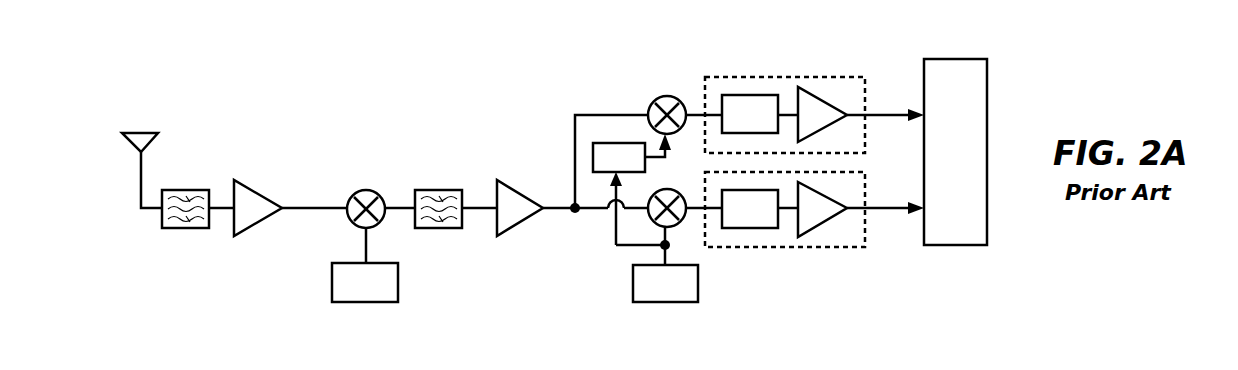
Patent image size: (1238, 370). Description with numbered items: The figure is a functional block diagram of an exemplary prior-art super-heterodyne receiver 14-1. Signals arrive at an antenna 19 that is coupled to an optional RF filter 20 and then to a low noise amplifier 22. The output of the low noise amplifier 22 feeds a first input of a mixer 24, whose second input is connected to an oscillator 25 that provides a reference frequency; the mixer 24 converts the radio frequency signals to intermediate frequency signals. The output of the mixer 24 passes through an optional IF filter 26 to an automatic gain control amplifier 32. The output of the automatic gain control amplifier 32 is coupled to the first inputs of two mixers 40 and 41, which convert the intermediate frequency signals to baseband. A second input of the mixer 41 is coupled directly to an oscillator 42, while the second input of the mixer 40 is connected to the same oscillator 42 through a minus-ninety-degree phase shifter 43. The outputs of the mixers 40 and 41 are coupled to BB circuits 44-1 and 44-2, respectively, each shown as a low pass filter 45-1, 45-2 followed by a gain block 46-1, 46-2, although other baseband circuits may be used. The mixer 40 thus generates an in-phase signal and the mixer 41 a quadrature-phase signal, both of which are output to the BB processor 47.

The super-heterodyne receiver 14-1 is at (305, 68).
The antenna 19 is at (148, 145).
The RF filter 20 is at (182, 228).
The low noise amplifier 22 is at (255, 187).
The mixer 24 is at (360, 190).
The oscillator 25 is at (402, 277).
The IF filter 26 is at (437, 188).
The automatic gain control amplifier 32 is at (522, 190).
The mixer 40 is at (648, 103).
The mixer 41 is at (672, 228).
The oscillator 42 is at (633, 290).
The −90° phase shifter 43 is at (647, 170).
The BB circuit 44-1 is at (745, 76).
The BB circuit 44-2 is at (867, 232).
The low pass filter 45-1 is at (752, 93).
The low pass filter 45-2 is at (750, 228).
The gain block 46-1 is at (822, 98).
The gain block 46-2 is at (818, 227).
The BB processor 47 is at (990, 128).